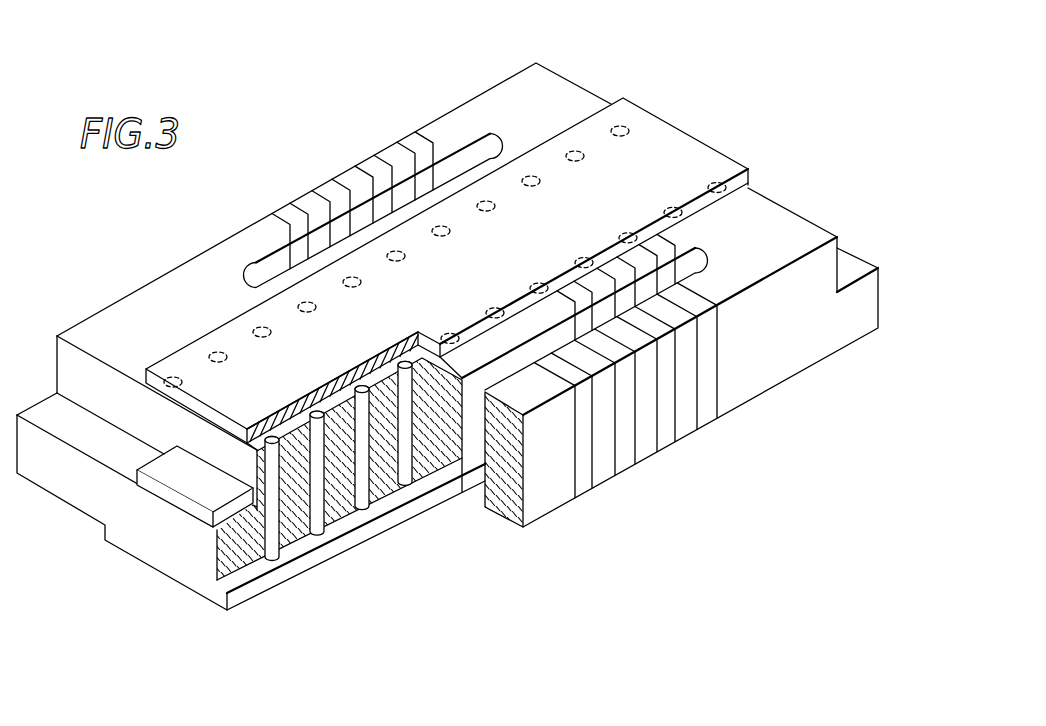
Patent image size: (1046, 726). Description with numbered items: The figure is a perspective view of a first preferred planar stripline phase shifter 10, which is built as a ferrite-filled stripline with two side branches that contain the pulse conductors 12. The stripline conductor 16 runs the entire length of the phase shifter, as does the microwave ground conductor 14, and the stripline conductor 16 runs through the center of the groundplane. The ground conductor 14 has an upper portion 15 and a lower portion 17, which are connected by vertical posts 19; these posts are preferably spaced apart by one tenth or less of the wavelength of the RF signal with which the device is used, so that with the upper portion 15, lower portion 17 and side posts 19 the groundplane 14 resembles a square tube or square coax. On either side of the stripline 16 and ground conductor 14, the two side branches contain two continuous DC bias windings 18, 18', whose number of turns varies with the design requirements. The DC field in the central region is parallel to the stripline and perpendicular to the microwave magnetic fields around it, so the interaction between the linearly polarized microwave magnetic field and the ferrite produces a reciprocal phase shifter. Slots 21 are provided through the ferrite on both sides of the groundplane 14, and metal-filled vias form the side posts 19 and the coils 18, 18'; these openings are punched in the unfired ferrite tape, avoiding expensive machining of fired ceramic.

The stripline phase shifter 10 is at (674, 70).
The pulse conductors 12 is at (788, 358).
The microwave ground conductor 14 is at (509, 105).
The upper portion 15 is at (692, 149).
The stripline conductor 16 is at (146, 481).
The lower portion 17 is at (173, 571).
The DC bias winding 18 is at (661, 380).
The DC bias winding 18' is at (352, 198).
The vertical posts 19 is at (250, 322).
The slots 21 is at (268, 270).